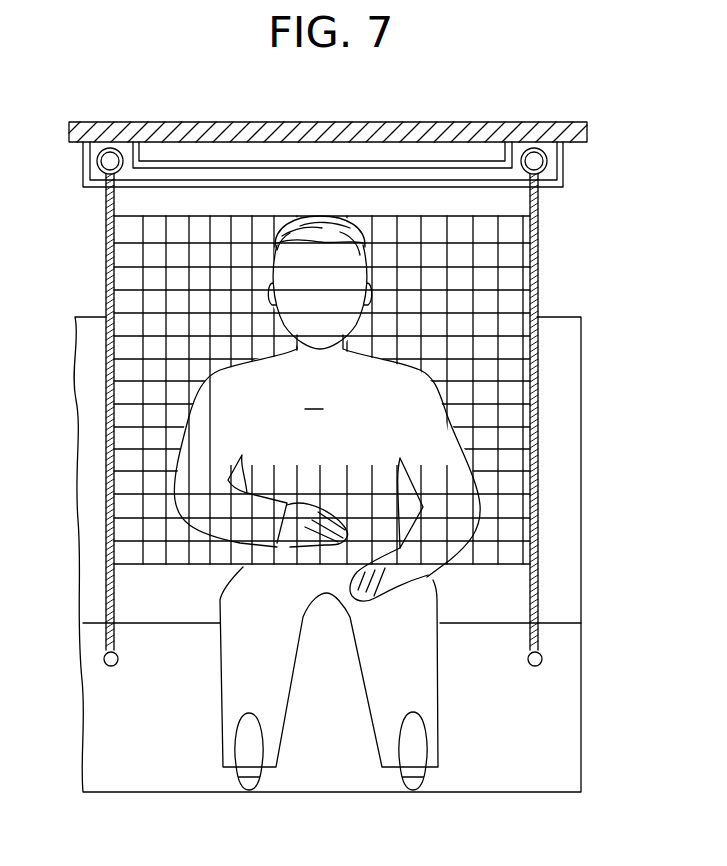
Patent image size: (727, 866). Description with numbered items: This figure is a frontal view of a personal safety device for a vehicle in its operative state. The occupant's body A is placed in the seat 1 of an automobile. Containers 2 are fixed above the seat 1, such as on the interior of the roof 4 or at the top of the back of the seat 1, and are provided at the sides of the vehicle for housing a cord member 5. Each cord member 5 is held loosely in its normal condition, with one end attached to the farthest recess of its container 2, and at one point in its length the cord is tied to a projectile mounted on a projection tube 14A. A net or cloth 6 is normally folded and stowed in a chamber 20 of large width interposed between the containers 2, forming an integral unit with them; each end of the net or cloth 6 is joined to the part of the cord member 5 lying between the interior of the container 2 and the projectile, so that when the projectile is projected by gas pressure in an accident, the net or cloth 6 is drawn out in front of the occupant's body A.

The seat 1 is at (566, 351).
The containers 2 is at (83, 167).
The roof 4 is at (437, 122).
The cord member 5 is at (114, 600).
The net or cloth 6 is at (145, 267).
The projection tube 14A is at (110, 148).
The chamber 20 is at (347, 177).
The occupant's body A is at (327, 503).